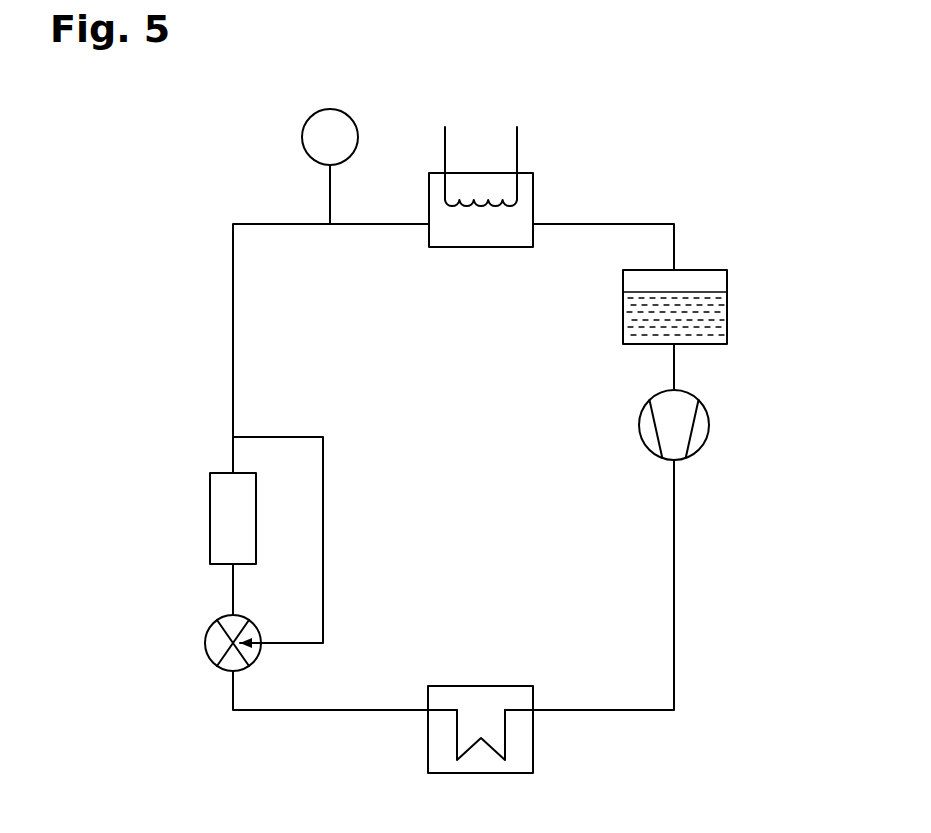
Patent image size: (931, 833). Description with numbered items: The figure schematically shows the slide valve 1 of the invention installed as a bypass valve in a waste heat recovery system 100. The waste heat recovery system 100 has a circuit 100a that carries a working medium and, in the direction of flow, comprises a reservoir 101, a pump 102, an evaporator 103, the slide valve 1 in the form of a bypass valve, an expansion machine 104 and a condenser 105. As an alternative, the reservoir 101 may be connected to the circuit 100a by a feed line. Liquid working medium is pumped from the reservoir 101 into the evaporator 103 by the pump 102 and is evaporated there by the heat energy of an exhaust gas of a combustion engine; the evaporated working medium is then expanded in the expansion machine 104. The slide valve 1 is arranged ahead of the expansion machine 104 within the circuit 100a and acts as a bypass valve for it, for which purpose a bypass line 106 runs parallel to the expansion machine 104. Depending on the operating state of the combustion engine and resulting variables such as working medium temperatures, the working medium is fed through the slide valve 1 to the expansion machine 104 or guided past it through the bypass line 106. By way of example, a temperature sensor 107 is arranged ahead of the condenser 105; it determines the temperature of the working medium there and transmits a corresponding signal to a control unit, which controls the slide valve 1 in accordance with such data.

The waste heat recovery system 100 is at (748, 160).
The circuit 100a is at (232, 328).
The reservoir 101 is at (708, 283).
The pump 102 is at (648, 426).
The evaporator 103 is at (478, 700).
The expansion machine 104 is at (232, 519).
The condenser 105 is at (482, 228).
The bypass line 106 is at (325, 510).
The temperature sensor 107 is at (313, 141).
The slide valve 1 is at (225, 644).